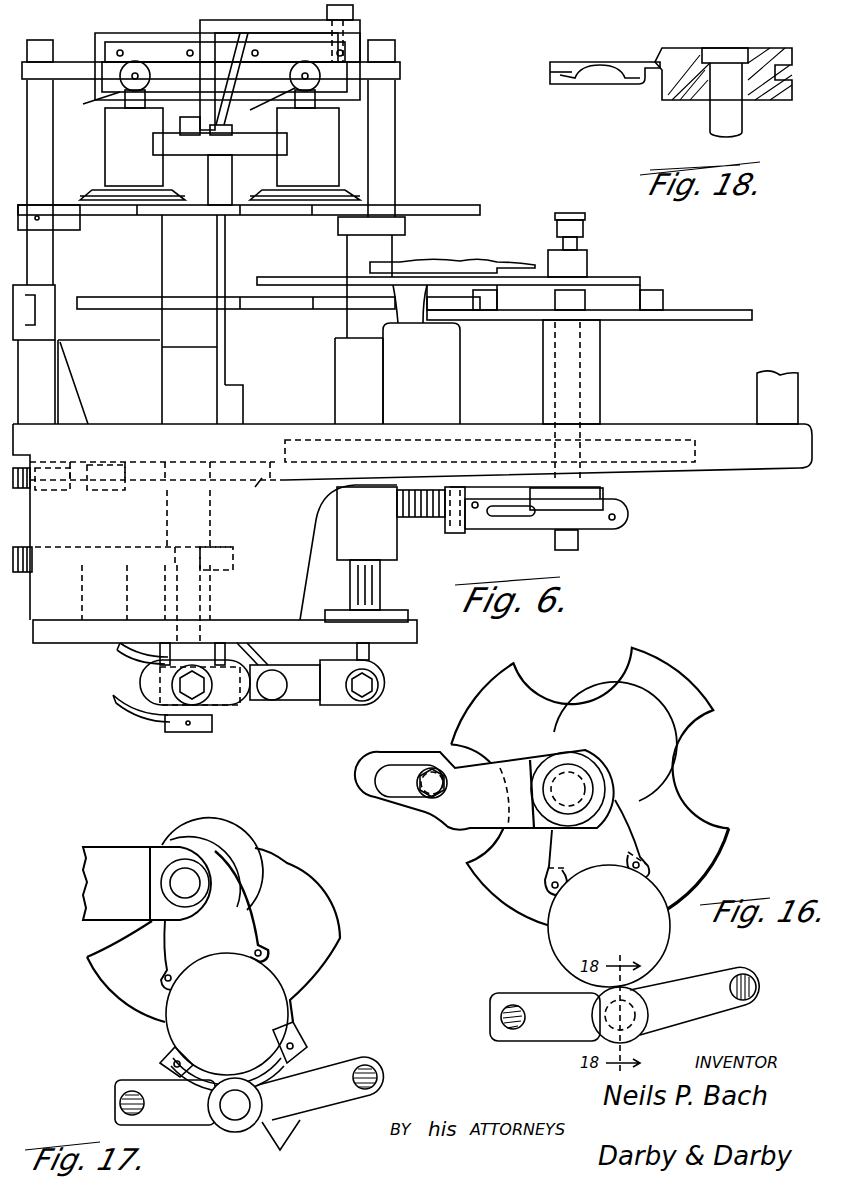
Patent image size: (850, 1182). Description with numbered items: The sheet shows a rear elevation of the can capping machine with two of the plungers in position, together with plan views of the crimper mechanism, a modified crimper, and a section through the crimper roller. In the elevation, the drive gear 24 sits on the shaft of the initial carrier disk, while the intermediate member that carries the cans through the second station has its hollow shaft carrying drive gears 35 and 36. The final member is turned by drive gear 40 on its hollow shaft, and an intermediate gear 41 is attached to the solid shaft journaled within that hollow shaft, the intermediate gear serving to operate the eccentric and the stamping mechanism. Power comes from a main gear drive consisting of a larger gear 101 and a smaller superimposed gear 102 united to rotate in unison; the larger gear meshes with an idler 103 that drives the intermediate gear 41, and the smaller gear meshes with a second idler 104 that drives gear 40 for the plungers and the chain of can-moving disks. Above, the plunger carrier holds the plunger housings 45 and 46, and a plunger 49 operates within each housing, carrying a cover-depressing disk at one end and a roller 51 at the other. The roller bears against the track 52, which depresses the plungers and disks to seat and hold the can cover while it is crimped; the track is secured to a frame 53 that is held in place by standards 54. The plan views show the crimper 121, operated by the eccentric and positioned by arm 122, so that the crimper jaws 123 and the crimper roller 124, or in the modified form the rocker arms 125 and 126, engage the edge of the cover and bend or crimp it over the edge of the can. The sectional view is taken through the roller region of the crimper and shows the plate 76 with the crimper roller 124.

In FIG. 6, the drive gear 24 is at (708, 444).
In FIG. 6, the drive gear 35 is at (318, 468).
In FIG. 6, the drive gear 36 is at (428, 442).
In FIG. 6, the drive gear 40 is at (258, 487).
In FIG. 6, the intermediate gear 41 is at (235, 560).
In FIG. 6, the plunger housing 45 is at (308, 147).
In FIG. 6, the plunger housing 46 is at (134, 147).
In FIG. 6, the plunger 49 is at (178, 113).
In FIG. 6, the roller 51 is at (160, 68).
In FIG. 6, the track 52 is at (160, 52).
In FIG. 6, the frame 53 is at (95, 40).
In FIG. 6, the standards 54 is at (42, 162).
In FIG. 18, the plate 76 is at (582, 62).
In FIG. 16, the plate 76 is at (560, 950).
In FIG. 17, the plate 76 is at (227, 1022).
In FIG. 6, the larger gear 101 is at (67, 586).
In FIG. 6, the smaller superimposed gear 102 is at (66, 466).
In FIG. 6, the idler 103 is at (162, 547).
In FIG. 6, the second idler 104 is at (116, 499).
In FIG. 16, the crimper 121 is at (555, 862).
In FIG. 17, the crimper 121 is at (170, 954).
In FIG. 16, the arm 122 is at (483, 820).
In FIG. 17, the arm 122 is at (108, 852).
In FIG. 16, the crimper jaws 123 is at (640, 866).
In FIG. 18, the crimper roller 124 is at (678, 100).
In FIG. 16, the crimper roller 124 is at (655, 975).
In FIG. 17, the crimper roller 124 is at (249, 1103).
In FIG. 17, the rocker arm 125 is at (287, 1022).
In FIG. 17, the rocker arm 126 is at (162, 1050).